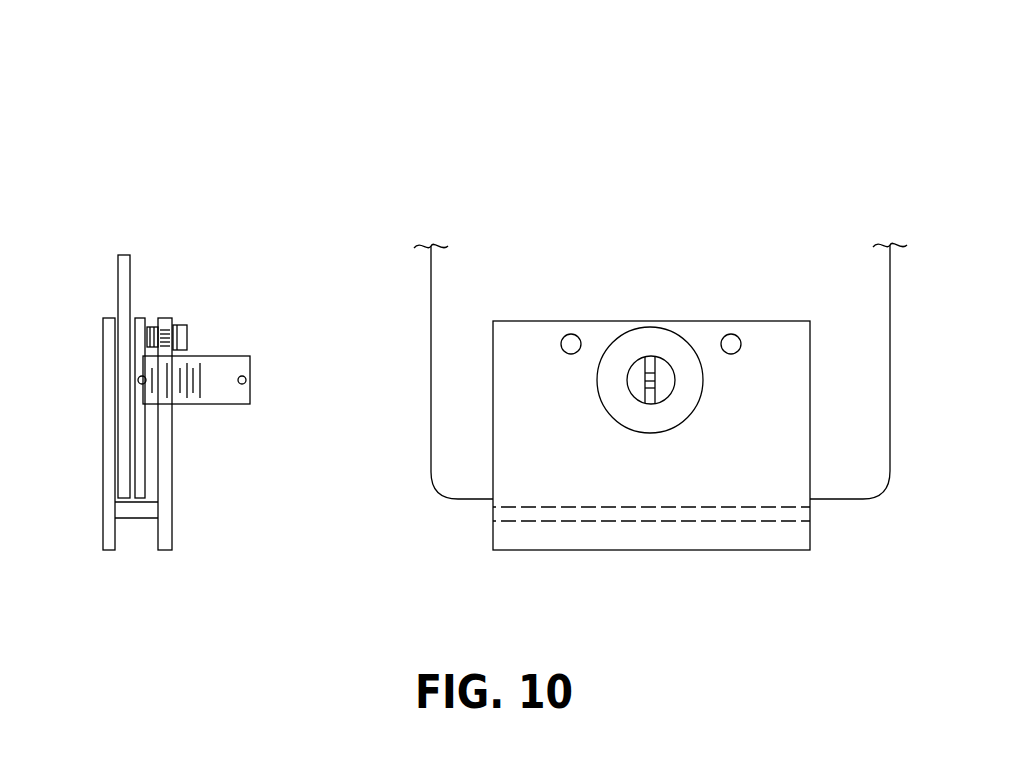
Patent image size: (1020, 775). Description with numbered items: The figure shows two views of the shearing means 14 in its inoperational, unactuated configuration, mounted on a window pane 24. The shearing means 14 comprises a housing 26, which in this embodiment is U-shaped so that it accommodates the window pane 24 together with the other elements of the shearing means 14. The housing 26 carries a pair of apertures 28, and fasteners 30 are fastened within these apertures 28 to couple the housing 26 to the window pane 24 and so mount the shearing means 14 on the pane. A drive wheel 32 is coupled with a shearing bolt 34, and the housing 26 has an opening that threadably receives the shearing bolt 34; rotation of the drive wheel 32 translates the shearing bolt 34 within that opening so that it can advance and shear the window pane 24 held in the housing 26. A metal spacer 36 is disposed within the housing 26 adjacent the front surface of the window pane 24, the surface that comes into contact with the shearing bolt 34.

The shearing means 14 is at (168, 140).
The window pane 24 is at (118, 276).
The housing 26 is at (172, 519).
The apertures 28 is at (571, 334).
The fasteners 30 is at (180, 325).
The drive wheel 32 is at (683, 410).
The shearing bolt 34 is at (220, 357).
The metal spacer 36 is at (138, 318).